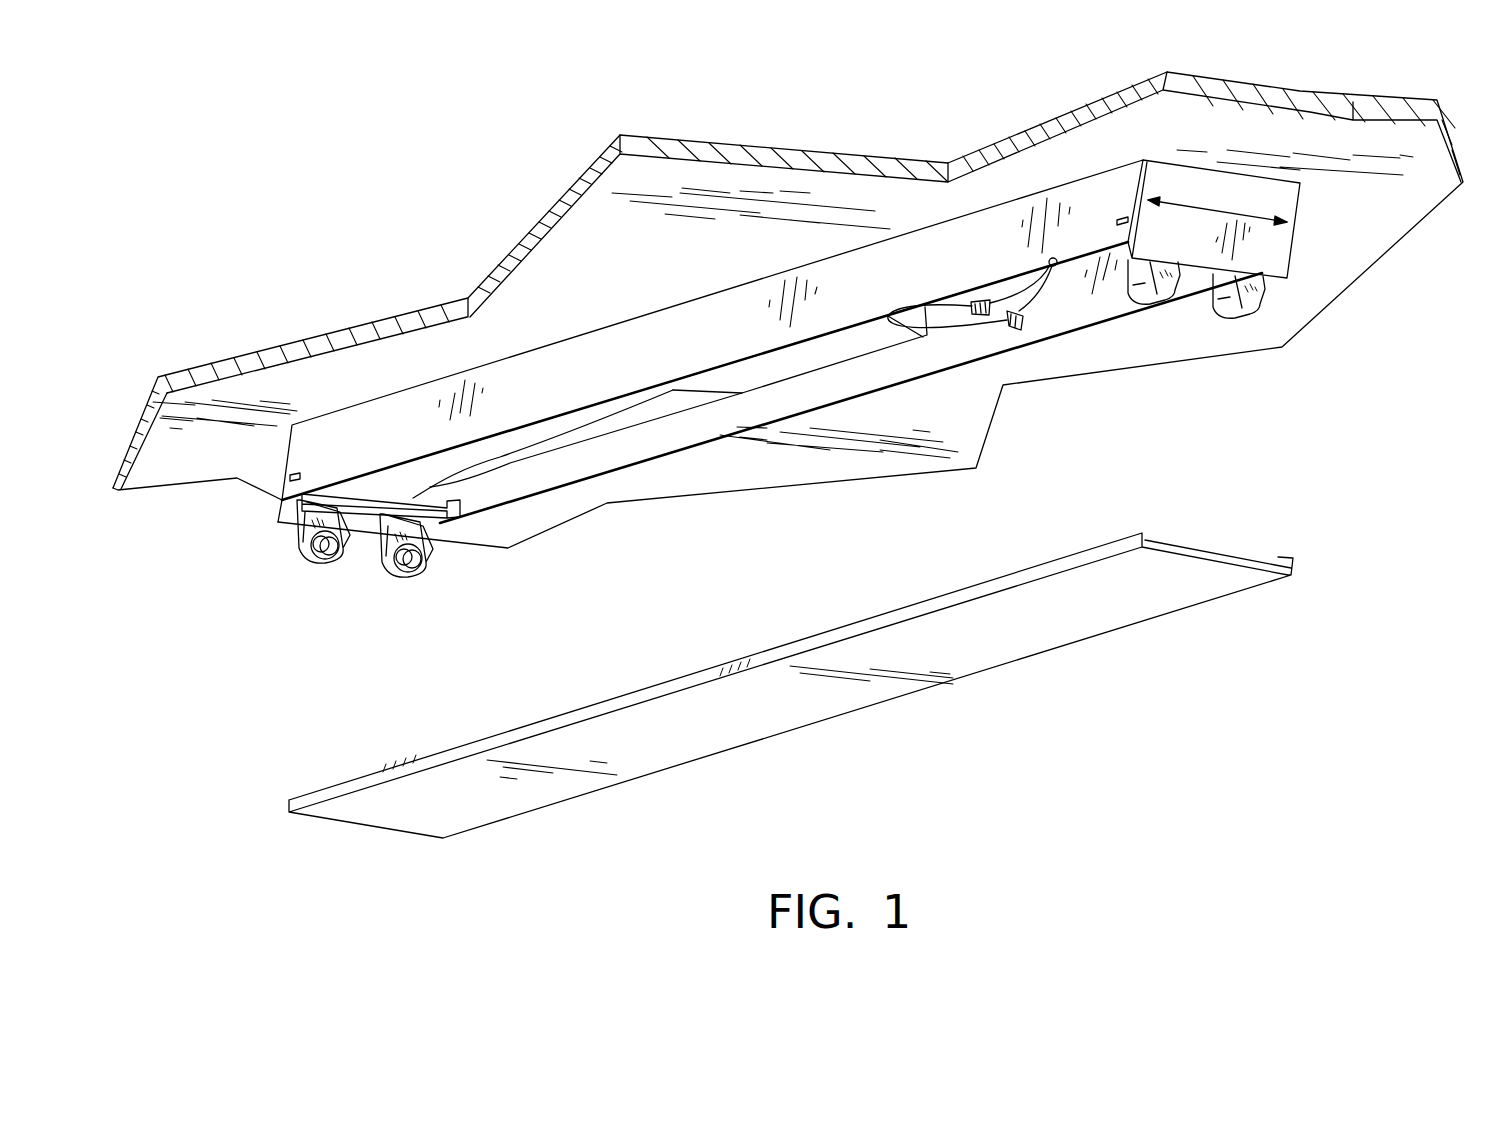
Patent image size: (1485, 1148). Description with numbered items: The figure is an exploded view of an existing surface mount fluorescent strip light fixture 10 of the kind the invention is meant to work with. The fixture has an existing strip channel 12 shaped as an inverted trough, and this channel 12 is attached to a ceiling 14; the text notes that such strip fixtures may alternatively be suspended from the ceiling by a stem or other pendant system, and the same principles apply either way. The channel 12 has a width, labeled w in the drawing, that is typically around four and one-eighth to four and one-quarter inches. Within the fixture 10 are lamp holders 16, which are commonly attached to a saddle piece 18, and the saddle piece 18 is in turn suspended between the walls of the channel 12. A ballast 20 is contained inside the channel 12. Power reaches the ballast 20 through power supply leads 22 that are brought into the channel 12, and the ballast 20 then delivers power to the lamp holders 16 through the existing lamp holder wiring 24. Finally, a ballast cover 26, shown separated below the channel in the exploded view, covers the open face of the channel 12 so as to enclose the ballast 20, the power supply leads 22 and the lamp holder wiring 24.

The surface mount fluorescent strip light fixture 10 is at (400, 426).
The strip channel 12 is at (605, 352).
The ceiling 14 is at (603, 210).
The lamp holders 16 is at (310, 566).
The saddle piece 18 is at (363, 508).
The ballast 20 is at (783, 370).
The power supply leads 22 is at (1053, 263).
The lamp holder wiring 24 is at (568, 453).
The ballast cover 26 is at (1102, 604).